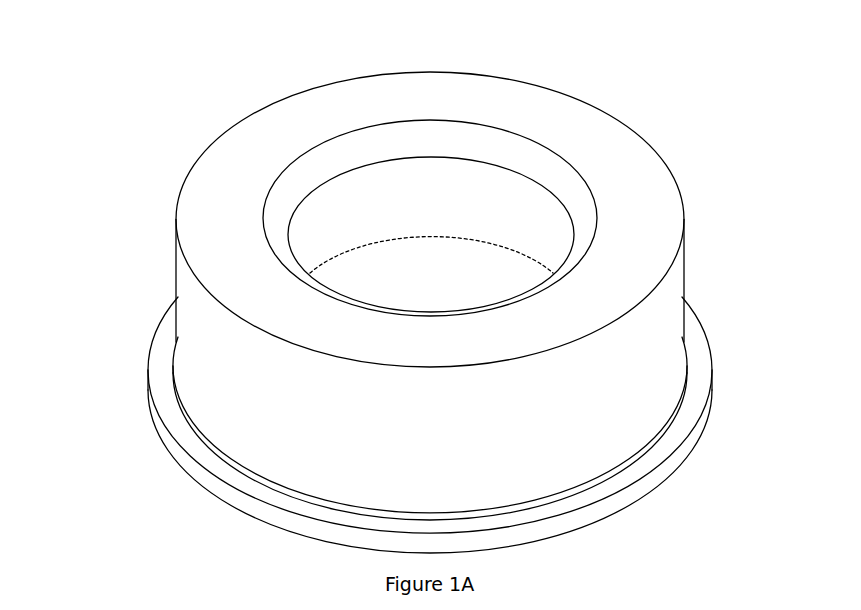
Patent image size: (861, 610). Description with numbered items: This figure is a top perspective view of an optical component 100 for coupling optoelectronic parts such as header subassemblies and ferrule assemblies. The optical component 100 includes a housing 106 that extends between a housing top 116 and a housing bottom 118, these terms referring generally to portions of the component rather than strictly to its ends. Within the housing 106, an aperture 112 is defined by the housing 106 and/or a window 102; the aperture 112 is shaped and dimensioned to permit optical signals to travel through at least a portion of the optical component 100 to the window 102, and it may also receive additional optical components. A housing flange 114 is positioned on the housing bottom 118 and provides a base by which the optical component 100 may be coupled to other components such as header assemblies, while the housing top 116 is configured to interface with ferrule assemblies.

The optical component 100 is at (128, 126).
The window 102 is at (413, 262).
The housing 106 is at (684, 262).
The aperture 112 is at (371, 262).
The housing flange 114 is at (160, 363).
The housing top 116 is at (241, 103).
The housing bottom 118 is at (235, 515).